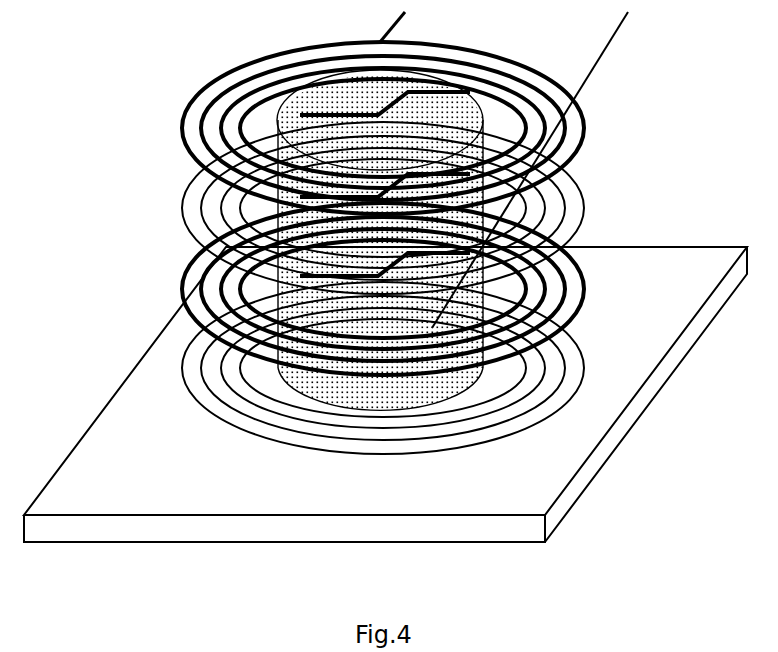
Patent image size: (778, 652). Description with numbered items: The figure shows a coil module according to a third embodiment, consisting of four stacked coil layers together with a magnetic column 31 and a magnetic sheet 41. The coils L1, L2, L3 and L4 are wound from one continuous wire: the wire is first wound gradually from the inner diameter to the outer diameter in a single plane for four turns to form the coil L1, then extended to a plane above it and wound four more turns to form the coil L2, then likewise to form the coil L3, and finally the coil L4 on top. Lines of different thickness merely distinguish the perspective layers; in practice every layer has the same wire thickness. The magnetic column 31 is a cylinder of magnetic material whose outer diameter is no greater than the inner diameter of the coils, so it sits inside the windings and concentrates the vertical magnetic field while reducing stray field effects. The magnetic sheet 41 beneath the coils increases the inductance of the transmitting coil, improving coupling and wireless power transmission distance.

The coil L4 is at (582, 123).
The coil L3 is at (585, 210).
The coil L2 is at (572, 268).
The coil L1 is at (565, 405).
The magnetic sheet 41 is at (612, 343).
The magnetic column 31 is at (410, 398).